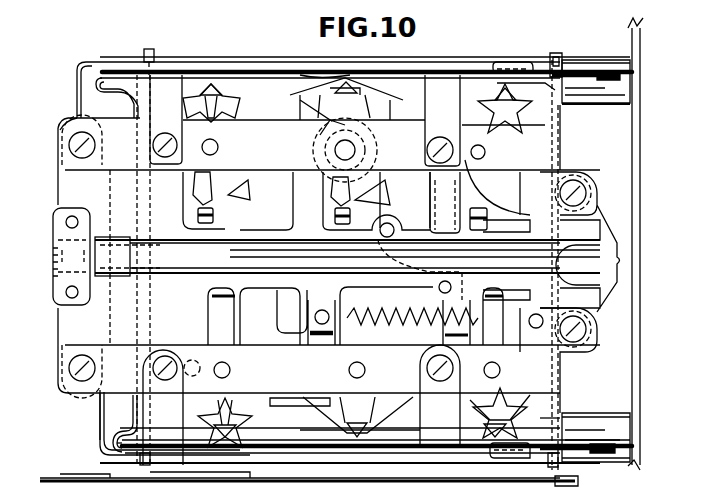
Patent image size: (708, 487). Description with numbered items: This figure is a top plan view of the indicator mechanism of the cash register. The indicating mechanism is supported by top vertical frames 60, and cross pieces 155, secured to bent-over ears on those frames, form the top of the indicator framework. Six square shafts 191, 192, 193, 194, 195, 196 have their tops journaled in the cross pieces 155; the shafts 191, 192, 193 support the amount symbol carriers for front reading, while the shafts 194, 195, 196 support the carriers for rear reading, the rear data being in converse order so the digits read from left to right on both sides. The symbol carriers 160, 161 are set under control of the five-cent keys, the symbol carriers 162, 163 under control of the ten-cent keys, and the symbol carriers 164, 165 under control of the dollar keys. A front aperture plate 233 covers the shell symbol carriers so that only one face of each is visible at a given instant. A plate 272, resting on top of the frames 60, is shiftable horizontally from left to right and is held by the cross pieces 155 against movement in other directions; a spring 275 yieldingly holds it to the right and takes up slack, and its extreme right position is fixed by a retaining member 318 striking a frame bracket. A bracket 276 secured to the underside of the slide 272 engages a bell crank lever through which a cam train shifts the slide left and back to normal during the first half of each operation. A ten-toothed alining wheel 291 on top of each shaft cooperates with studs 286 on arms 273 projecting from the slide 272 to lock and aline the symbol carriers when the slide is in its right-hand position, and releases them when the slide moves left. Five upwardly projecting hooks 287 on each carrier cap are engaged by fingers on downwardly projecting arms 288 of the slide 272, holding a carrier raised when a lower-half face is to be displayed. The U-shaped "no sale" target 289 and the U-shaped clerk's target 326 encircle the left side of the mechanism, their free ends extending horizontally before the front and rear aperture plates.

The top vertical frames 60 is at (566, 125).
The cross pieces 155 is at (566, 173).
The symbol carrier 160 is at (500, 410).
The symbol carrier 161 is at (194, 100).
The symbol carrier 162 is at (386, 400).
The symbol carrier 163 is at (378, 106).
The symbol carrier 164 is at (238, 405).
The symbol carrier 165 is at (512, 112).
The square shaft 191 is at (490, 362).
The square shaft 192 is at (363, 365).
The square shaft 193 is at (228, 364).
The square shaft 194 is at (220, 133).
The square shaft 195 is at (429, 202).
The square shaft 196 is at (477, 156).
The aperture plate 233 is at (400, 70).
The plate 272 is at (252, 248).
The arms 273 is at (293, 200).
The spring 275 is at (438, 318).
The bracket 276 is at (432, 236).
The studs 286 is at (320, 151).
The hooks 287 is at (352, 76).
The arms 288 is at (214, 214).
The "no sale" target 289 is at (116, 427).
The alining wheel 291 is at (322, 113).
The retaining member 318 is at (58, 315).
The clerk's target 326 is at (100, 404).